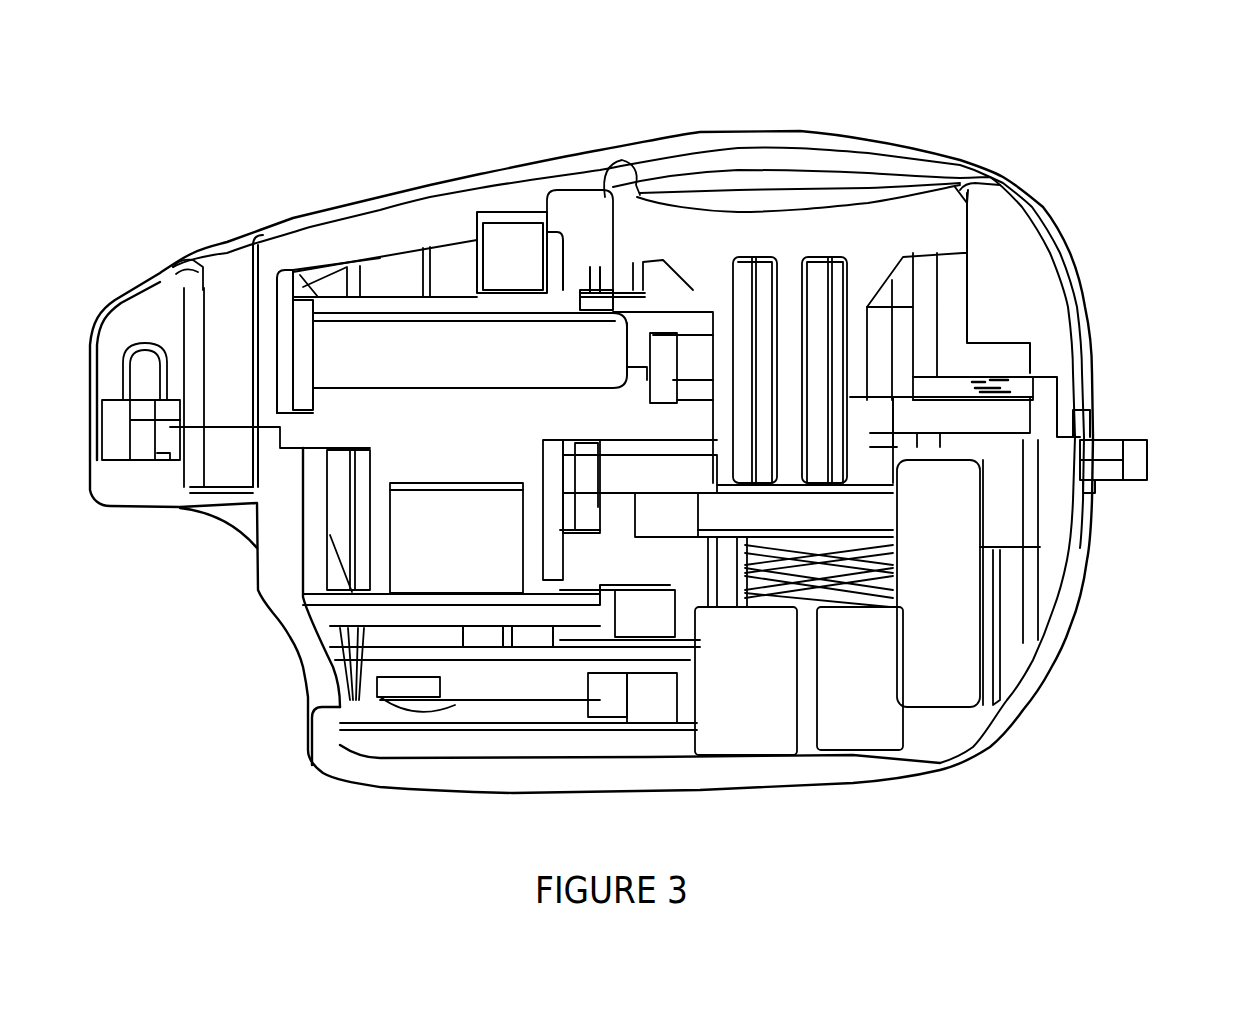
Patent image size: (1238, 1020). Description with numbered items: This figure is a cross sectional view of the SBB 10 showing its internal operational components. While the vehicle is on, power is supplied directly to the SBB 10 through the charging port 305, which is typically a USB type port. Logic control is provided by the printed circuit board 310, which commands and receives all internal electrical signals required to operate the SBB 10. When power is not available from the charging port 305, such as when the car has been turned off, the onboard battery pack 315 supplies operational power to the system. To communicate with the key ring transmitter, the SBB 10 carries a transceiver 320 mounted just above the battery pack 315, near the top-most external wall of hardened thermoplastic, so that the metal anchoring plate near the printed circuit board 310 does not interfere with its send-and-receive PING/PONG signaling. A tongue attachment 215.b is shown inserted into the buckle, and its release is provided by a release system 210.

The smart buckle body 10 is at (270, 156).
The release system 210 is at (907, 230).
The tongue attachment 215.b is at (1140, 452).
The charging port 305 is at (333, 597).
The printed circuit board 310 is at (380, 653).
The battery pack 315 is at (393, 327).
The transceiver 320 is at (520, 230).